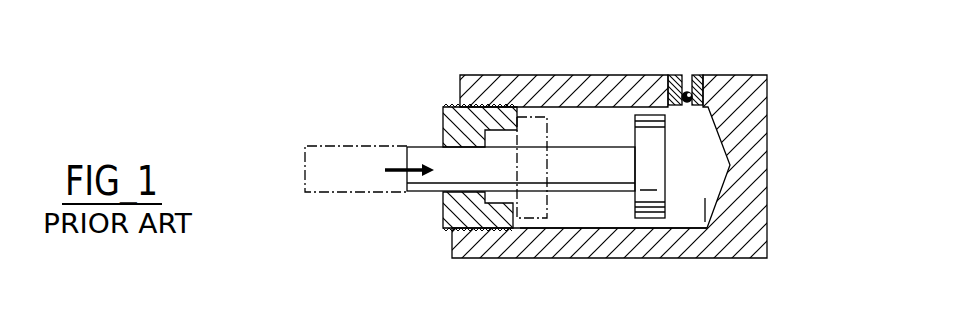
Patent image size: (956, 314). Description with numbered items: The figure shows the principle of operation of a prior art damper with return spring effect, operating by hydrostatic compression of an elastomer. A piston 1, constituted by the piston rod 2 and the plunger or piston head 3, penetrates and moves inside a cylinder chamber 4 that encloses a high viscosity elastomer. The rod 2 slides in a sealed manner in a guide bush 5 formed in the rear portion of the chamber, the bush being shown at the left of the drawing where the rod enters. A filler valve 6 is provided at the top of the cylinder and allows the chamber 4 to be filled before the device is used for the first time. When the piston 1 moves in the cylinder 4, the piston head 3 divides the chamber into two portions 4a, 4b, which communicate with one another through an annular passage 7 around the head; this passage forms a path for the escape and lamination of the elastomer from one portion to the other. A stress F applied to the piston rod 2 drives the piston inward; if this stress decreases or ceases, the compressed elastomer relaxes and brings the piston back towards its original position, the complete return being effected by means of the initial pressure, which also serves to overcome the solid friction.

The piston 1 is at (606, 202).
The piston rod 2 is at (521, 169).
The piston head 3 is at (653, 128).
The cylinder chamber 4 is at (694, 137).
The chamber portion 4a is at (697, 167).
The chamber portion 4b is at (566, 165).
The guide bush 5 is at (442, 208).
The filler valve 6 is at (685, 70).
The annular passage 7 is at (648, 225).